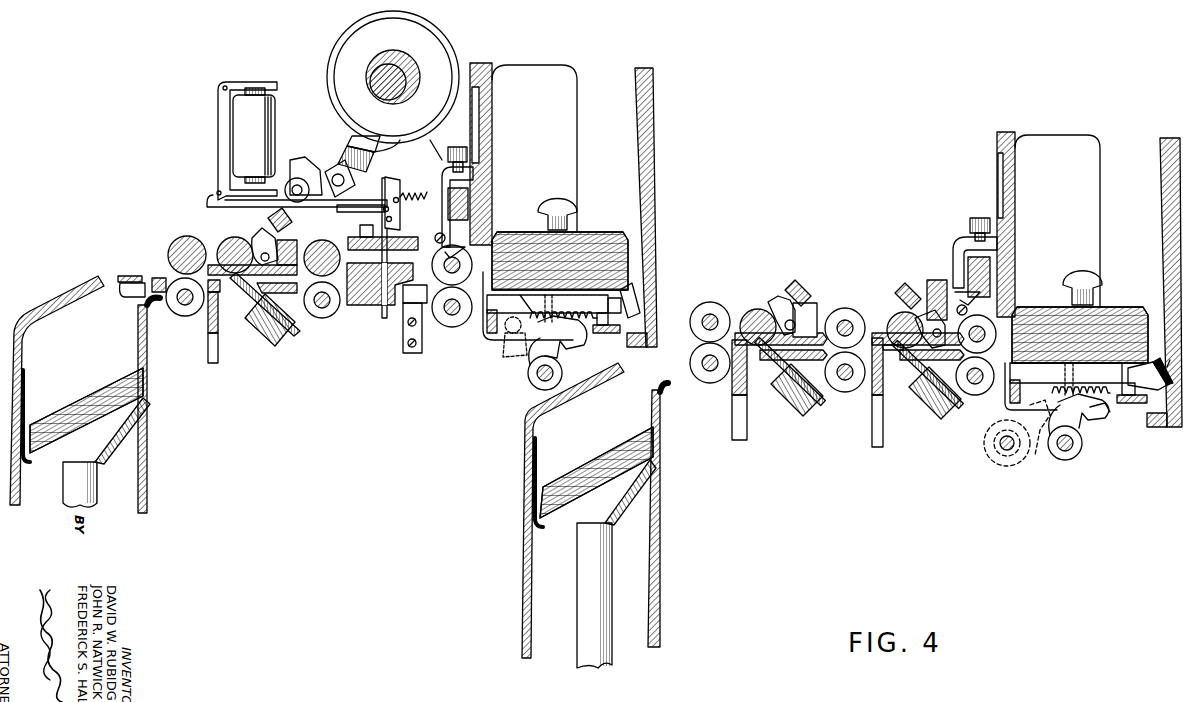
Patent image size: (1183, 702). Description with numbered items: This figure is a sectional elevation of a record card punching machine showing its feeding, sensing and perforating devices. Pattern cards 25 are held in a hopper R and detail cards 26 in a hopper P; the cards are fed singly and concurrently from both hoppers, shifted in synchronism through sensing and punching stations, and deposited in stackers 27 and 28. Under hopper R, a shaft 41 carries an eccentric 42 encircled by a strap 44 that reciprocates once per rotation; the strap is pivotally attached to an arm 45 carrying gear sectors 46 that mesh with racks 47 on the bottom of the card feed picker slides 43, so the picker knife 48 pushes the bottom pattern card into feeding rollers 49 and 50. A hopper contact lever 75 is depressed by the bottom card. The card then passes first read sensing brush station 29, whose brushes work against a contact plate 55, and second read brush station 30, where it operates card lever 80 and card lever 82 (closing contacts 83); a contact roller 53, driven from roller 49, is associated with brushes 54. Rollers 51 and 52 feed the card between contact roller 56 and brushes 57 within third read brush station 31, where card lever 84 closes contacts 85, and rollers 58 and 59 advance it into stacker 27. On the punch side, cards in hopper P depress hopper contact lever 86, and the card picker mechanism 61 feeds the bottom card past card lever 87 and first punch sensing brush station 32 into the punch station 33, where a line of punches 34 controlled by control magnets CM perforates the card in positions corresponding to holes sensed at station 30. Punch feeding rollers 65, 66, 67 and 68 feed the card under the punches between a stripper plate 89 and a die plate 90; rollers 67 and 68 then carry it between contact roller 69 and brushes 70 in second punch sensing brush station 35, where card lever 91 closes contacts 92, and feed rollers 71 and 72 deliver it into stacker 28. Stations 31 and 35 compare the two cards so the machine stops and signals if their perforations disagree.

The pattern cards 25 is at (1145, 307).
The detail cards 26 is at (586, 244).
The stacker 27 is at (608, 438).
The stacker 28 is at (105, 382).
The first read sensing brush station 29 is at (947, 257).
The second read brush station 30 is at (920, 403).
The third read brush station 31 is at (770, 390).
The first punch sensing brush station 32 is at (428, 175).
The punch station 33 is at (390, 320).
The line of punches 34 is at (387, 230).
The second punch sensing brush station 35 is at (245, 328).
The shaft 41 is at (1002, 450).
The eccentric 42 is at (1012, 466).
The card feed picker slides 43 is at (1167, 367).
The strap 44 is at (1030, 455).
The arm 45 is at (1087, 430).
The gear sectors 46 is at (1080, 455).
The racks 47 is at (1107, 383).
The picker knife 48 is at (1157, 385).
The feeding roller 49 is at (1010, 317).
The feeding roller 50 is at (964, 393).
The feeding roller 51 is at (845, 320).
The feeding roller 52 is at (853, 388).
The contact roller 53 is at (890, 320).
The brushes 54 is at (923, 367).
The contact plate 55 is at (922, 383).
The contact roller 56 is at (743, 317).
The brushes 57 is at (780, 365).
The roller 58 is at (695, 318).
The roller 59 is at (705, 383).
The card picker mechanism 61 is at (636, 300).
The punch feeding roller 65 is at (474, 262).
The punch feeding roller 66 is at (462, 323).
The punch feeding roller 67 is at (328, 237).
The punch feeding roller 68 is at (330, 320).
The contact roller 69 is at (225, 240).
The brushes 70 is at (252, 298).
The feed roller 71 is at (170, 243).
The feed roller 72 is at (181, 315).
The hopper contact lever 75 is at (1095, 412).
The card lever 80 is at (1003, 410).
The card lever 82 is at (900, 308).
The contacts 83 is at (908, 290).
The card lever 84 is at (782, 307).
The contacts 85 is at (793, 290).
The hopper contact lever 86 is at (518, 357).
The card lever 87 is at (488, 330).
The stripper plate 89 is at (373, 305).
The die plate 90 is at (380, 318).
The card lever 91 is at (253, 240).
The contacts 92 is at (279, 220).
The control magnets CM is at (277, 133).
The hopper P is at (612, 140).
The hopper R is at (1137, 188).